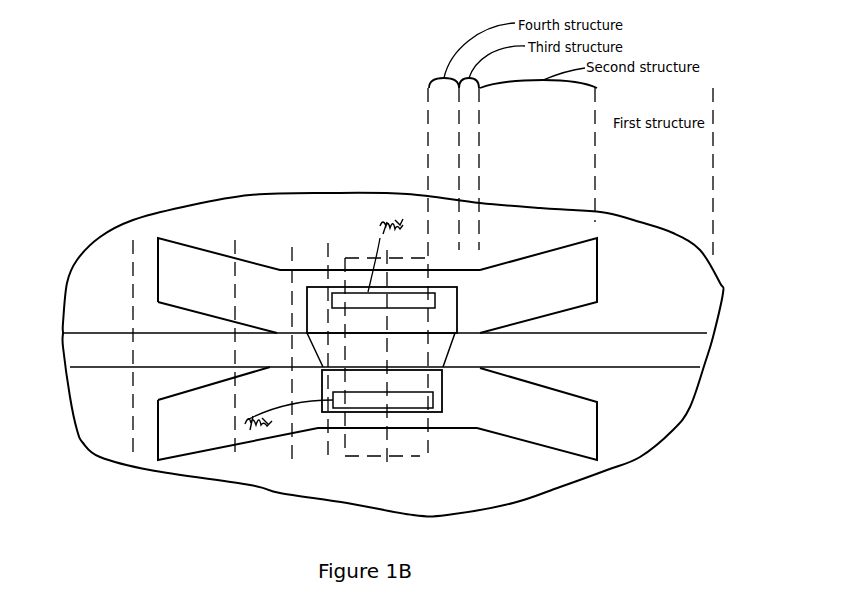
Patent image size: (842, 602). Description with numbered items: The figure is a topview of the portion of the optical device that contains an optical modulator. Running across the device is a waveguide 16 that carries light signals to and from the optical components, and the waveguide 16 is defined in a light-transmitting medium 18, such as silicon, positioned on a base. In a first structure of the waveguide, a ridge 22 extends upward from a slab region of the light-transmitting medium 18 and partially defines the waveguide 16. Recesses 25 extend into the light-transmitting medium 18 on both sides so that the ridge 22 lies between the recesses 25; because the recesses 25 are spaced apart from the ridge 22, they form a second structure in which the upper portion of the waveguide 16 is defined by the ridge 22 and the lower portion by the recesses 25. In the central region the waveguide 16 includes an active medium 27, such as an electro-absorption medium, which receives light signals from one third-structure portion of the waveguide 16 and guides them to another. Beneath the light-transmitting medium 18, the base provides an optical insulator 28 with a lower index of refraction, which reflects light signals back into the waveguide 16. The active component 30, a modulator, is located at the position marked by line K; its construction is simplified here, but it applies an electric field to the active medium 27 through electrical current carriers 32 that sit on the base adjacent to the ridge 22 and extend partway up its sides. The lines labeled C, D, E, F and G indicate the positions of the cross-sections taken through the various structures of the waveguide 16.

The waveguide 16 is at (641, 322).
The light-transmitting medium 18 is at (660, 238).
The ridge 22 is at (127, 370).
The recesses 25 is at (168, 238).
The active medium 27 is at (453, 337).
The optical insulator 28 is at (538, 268).
The active component 30 is at (352, 458).
The electrical current carriers 32 is at (460, 306).
The section line C is at (130, 280).
The section line D is at (232, 263).
The section line E is at (288, 250).
The section line F is at (327, 258).
The section line G is at (388, 435).
The line K is at (352, 258).